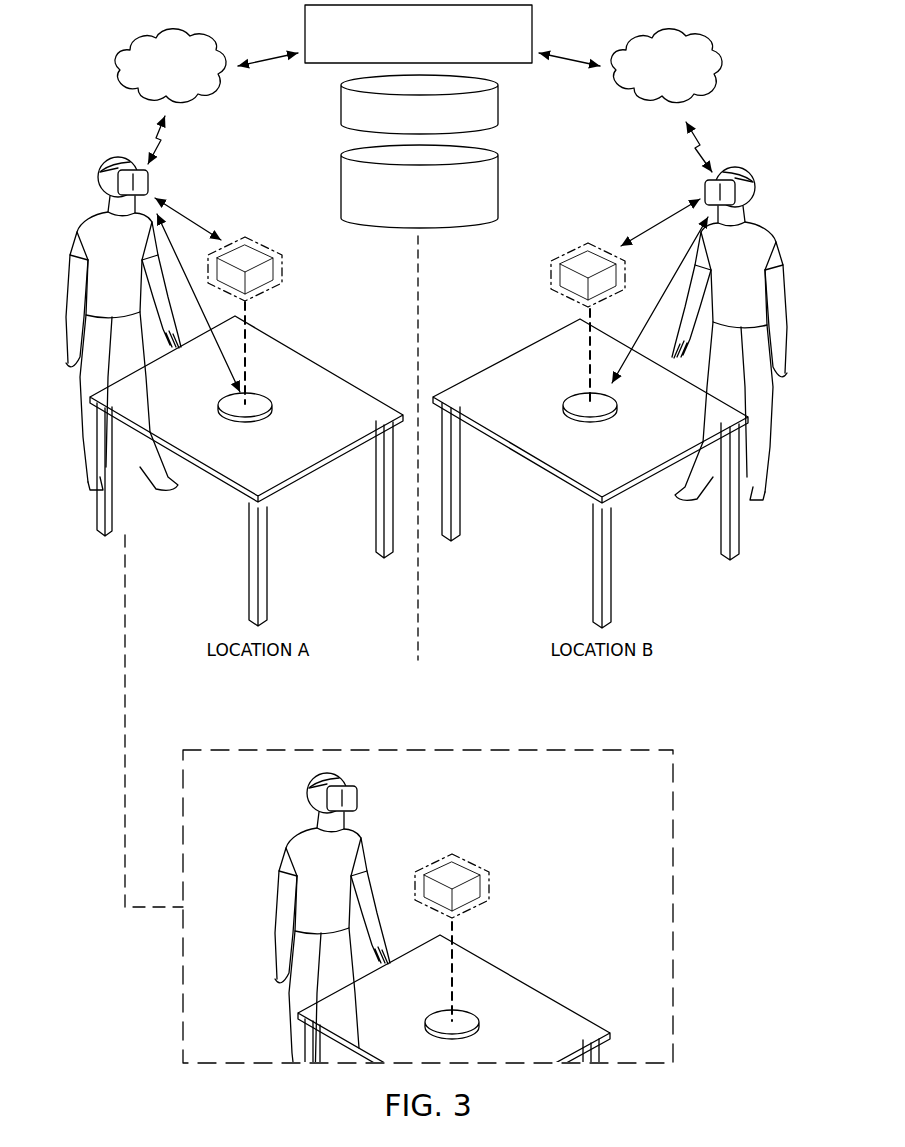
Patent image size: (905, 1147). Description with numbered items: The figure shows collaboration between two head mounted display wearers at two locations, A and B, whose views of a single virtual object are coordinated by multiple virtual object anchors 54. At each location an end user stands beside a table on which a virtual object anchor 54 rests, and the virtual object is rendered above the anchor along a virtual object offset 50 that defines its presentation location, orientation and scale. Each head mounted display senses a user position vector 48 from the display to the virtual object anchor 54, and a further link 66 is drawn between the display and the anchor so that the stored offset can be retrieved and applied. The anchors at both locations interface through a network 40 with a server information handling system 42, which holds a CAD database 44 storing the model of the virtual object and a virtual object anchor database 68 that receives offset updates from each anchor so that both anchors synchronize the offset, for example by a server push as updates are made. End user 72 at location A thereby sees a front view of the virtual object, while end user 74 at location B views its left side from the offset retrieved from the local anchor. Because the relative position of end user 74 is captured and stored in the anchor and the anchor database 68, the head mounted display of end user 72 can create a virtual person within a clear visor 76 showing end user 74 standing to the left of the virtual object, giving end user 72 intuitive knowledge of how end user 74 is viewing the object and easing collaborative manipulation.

The network 40 is at (108, 69).
The server information handling system 42 is at (303, 32).
The CAD database 44 is at (341, 101).
The user position vector 48 is at (188, 220).
The virtual object offset 50 is at (249, 356).
The virtual object anchor 54 is at (275, 407).
The wireless link to anchor 66 is at (218, 357).
The virtual object anchor database 68 is at (341, 186).
The end user 72 is at (71, 281).
The end user 74 is at (786, 293).
The clear visor 76 is at (518, 747).